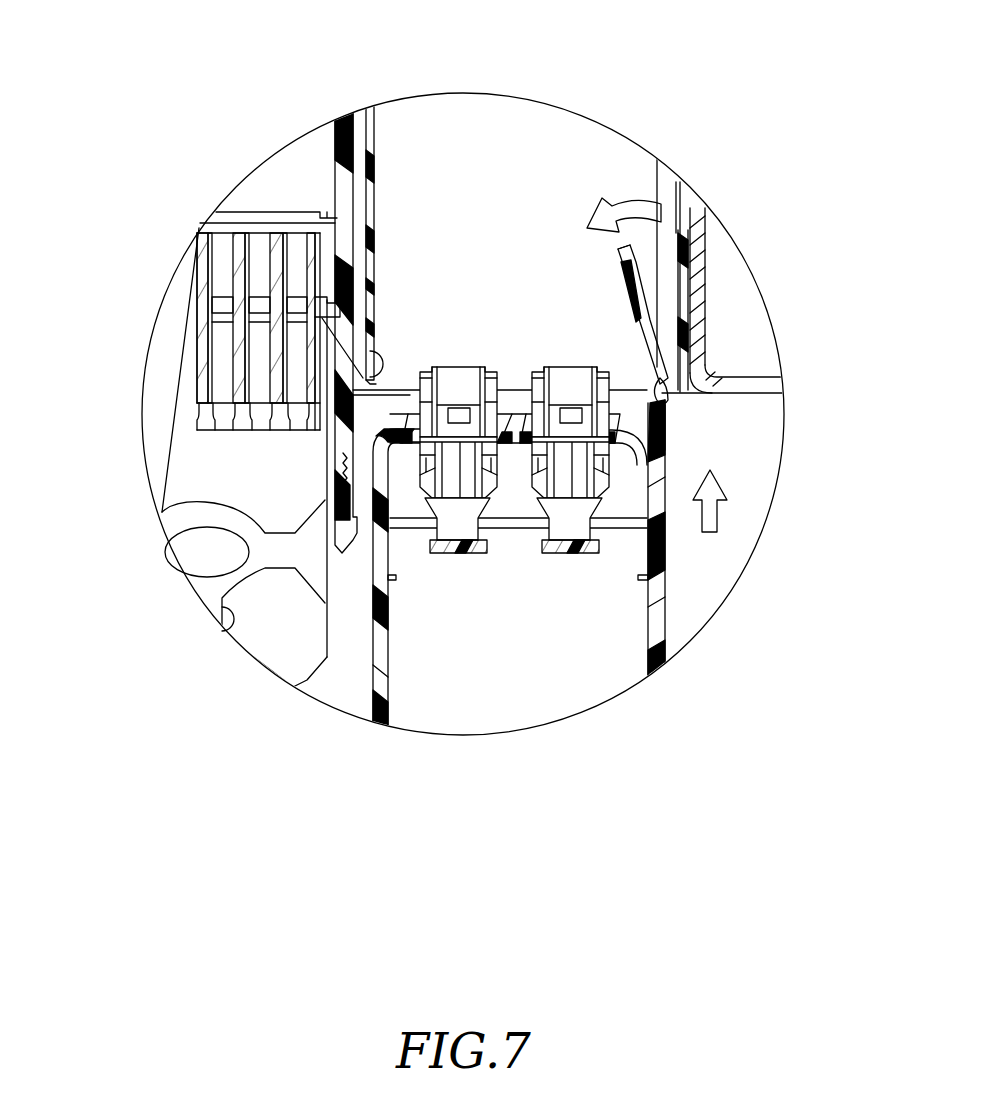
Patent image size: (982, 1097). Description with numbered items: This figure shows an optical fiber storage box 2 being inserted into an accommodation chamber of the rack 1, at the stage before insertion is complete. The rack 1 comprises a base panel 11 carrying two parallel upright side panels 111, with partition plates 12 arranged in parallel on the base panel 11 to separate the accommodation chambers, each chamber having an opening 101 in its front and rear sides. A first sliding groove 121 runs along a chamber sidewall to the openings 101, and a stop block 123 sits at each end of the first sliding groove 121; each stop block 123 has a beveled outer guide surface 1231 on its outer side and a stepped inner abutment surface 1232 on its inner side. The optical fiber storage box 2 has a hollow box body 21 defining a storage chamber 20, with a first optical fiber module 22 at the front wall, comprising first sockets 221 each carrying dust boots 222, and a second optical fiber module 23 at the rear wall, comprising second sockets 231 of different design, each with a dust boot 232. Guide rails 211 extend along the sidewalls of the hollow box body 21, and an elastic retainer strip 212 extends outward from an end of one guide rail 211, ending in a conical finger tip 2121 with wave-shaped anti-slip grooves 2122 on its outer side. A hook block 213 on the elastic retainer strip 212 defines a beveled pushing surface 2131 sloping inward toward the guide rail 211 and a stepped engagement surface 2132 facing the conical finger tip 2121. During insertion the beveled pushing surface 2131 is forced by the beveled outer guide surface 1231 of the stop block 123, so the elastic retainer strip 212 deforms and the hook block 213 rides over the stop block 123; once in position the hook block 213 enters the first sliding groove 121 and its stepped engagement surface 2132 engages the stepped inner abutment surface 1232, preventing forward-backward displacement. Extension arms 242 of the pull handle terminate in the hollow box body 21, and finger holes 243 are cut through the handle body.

The rack 1 is at (670, 196).
The base panel 11 is at (487, 131).
The partition plate 12 is at (669, 240).
The first sliding groove 121 is at (663, 180).
The upright side panel 111 is at (692, 225).
The stop block 123 is at (758, 343).
The beveled outer guide surface 1231 is at (735, 381).
The stepped inner abutment surface 1232 is at (688, 387).
The opening 101 is at (368, 356).
The storage chamber 20 is at (220, 393).
The first optical fiber module 22 is at (204, 427).
The first socket 221 is at (191, 331).
The dust boot 222 is at (185, 242).
The extension arm 242 is at (330, 463).
The finger hole 243 is at (228, 629).
The optical fiber storage box 2 is at (602, 530).
The hollow box body 21 is at (612, 483).
The guide rail 211 is at (653, 636).
The elastic retainer strip 212 is at (711, 274).
The conical finger tip 2121 is at (625, 258).
The wave-shaped anti-slip groove 2122 is at (635, 293).
The hook block 213 is at (752, 356).
The beveled pushing surface 2131 is at (683, 393).
The stepped engagement surface 2132 is at (662, 383).
The second optical fiber module 23 is at (587, 631).
The second socket 231 is at (528, 425).
The dust boot 232 is at (570, 528).